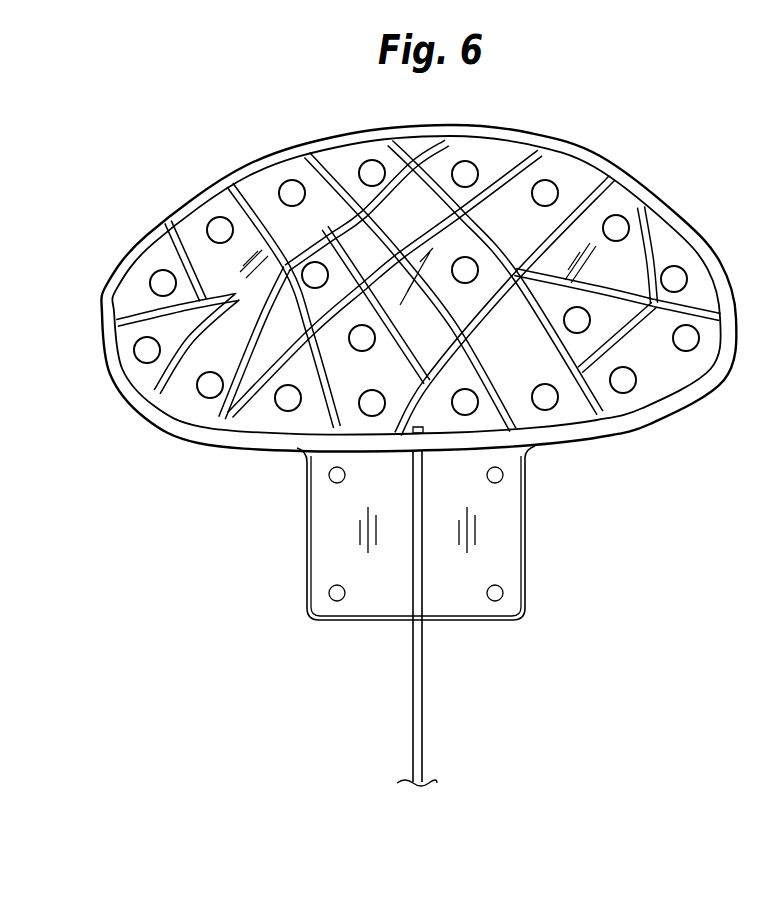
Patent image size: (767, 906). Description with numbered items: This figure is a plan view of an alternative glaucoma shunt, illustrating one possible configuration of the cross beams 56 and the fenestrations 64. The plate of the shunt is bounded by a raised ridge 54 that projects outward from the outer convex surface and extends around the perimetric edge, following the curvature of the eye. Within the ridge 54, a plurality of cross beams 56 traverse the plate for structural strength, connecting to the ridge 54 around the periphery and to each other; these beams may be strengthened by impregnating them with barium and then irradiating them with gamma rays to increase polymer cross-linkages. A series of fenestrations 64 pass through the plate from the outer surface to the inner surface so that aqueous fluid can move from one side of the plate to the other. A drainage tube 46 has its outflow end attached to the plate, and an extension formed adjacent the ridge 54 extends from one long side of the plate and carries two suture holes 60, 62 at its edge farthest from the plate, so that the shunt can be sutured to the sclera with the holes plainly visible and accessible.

The drainage tube 46 is at (412, 727).
The raised ridge 54 is at (679, 218).
The cross beams 56 is at (280, 155).
The suture hole 60 is at (330, 598).
The suture hole 62 is at (502, 593).
The fenestrations 64 is at (328, 477).